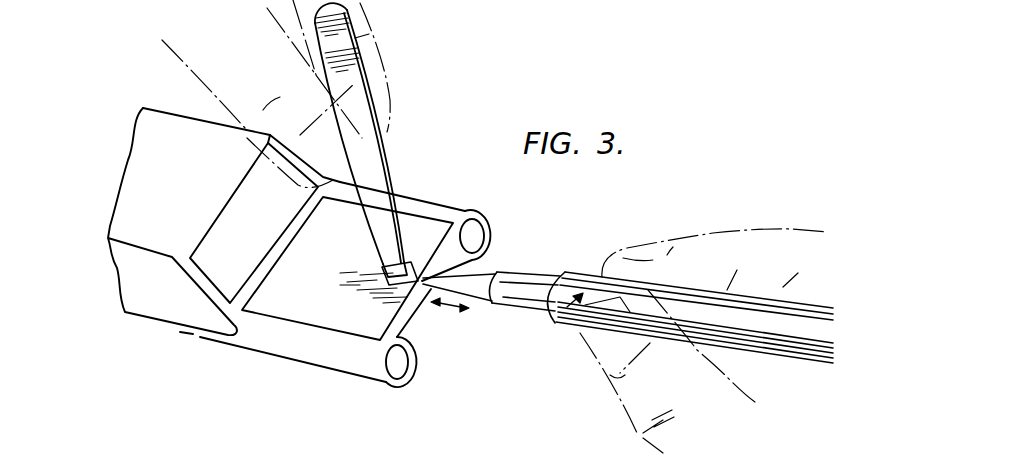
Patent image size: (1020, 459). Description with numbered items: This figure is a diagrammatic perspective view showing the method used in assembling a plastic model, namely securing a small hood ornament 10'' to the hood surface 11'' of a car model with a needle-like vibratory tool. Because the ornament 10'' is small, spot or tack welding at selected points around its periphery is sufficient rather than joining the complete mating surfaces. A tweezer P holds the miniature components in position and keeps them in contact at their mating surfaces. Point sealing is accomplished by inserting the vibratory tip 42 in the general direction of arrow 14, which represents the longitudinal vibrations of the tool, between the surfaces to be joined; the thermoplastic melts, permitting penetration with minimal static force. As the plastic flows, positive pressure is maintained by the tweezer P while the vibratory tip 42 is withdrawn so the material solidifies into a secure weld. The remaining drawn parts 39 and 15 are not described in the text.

The tweezer P is at (390, 182).
The hood ornament 10'' is at (366, 277).
The hood surface 11'' is at (247, 256).
The arrow 14 is at (450, 313).
The vibratory tip 42 is at (462, 283).
The cable sleeve 39 is at (537, 282).
The conductors 15 is at (556, 312).